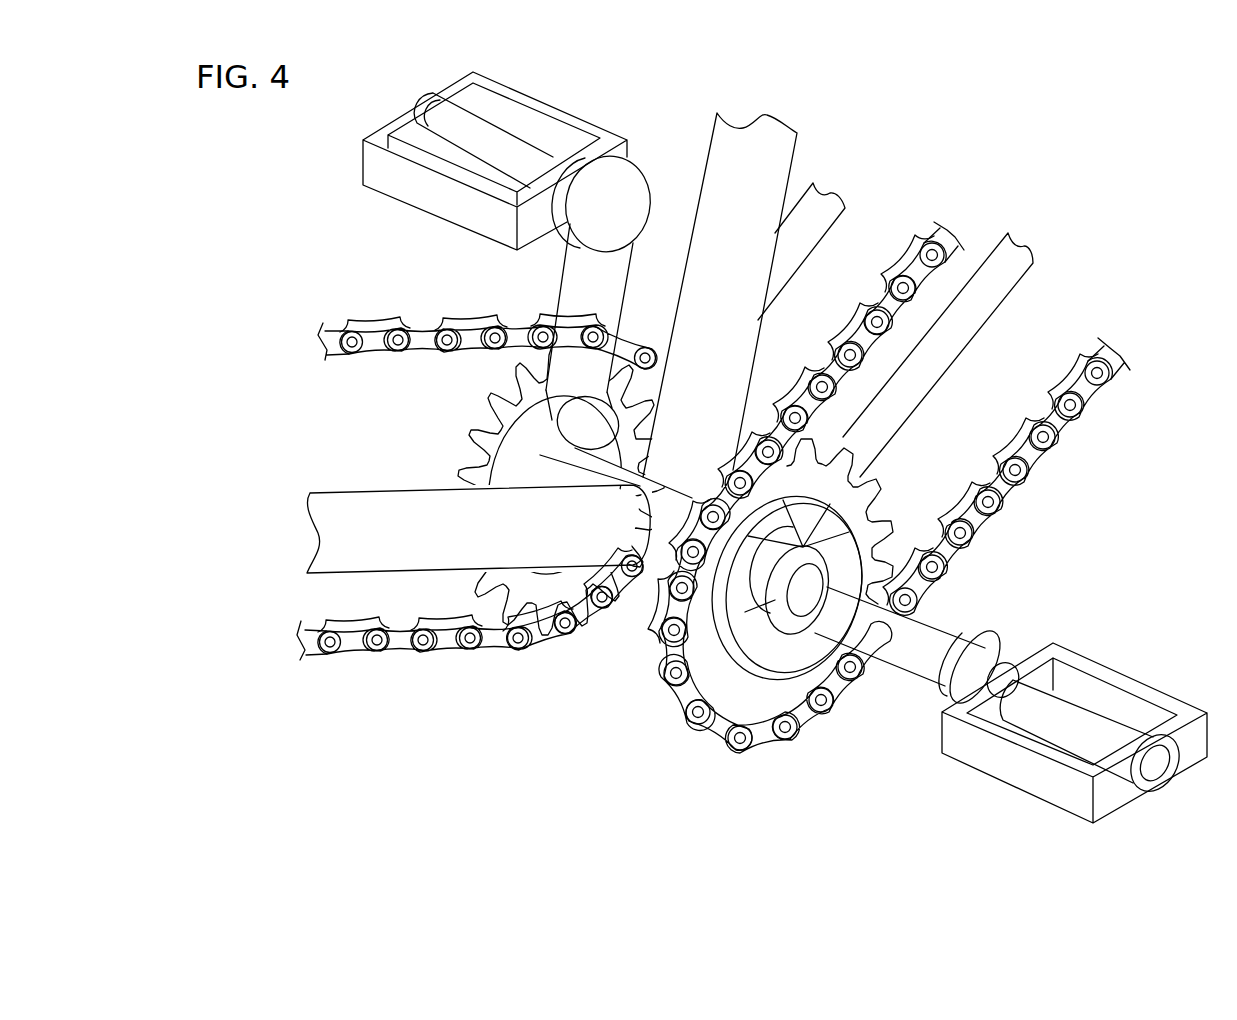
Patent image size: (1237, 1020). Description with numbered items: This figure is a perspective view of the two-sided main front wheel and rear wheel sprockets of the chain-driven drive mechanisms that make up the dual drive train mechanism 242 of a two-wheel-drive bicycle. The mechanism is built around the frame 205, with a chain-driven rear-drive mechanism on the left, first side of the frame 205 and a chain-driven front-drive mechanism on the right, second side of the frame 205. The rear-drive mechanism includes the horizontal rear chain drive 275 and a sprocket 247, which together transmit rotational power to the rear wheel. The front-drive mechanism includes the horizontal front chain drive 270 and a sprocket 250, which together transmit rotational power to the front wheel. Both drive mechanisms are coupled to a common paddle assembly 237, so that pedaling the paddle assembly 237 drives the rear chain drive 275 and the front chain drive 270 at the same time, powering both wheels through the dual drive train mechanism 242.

The frame 205 is at (763, 177).
The paddle assembly 237 is at (768, 617).
The dual drive train mechanism 242 is at (418, 770).
The sprocket 247 is at (763, 703).
The sprocket 250 is at (535, 600).
The horizontal front chain drive 270 is at (372, 337).
The horizontal rear chain drive 275 is at (928, 228).